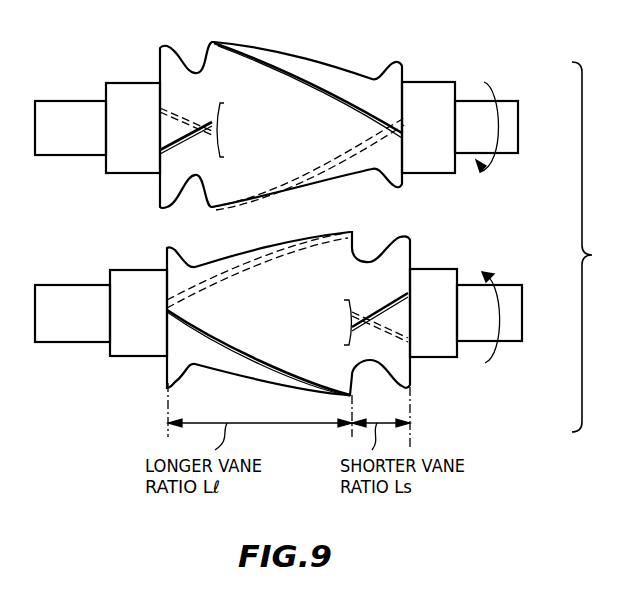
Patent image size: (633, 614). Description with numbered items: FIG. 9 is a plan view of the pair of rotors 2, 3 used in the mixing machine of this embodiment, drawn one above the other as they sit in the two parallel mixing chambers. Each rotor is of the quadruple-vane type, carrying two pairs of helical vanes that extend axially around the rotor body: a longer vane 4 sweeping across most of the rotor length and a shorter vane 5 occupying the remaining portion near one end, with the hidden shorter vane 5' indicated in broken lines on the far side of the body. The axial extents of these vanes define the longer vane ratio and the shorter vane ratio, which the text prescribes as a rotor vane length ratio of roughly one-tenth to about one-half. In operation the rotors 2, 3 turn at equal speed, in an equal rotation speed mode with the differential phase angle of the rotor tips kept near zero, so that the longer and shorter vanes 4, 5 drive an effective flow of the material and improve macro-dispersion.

The rotor 2 is at (512, 140).
The rotor 3 is at (515, 297).
The longer vane 4 is at (362, 152).
The shorter vane 5 is at (284, 224).
The shorter vane (hidden) 5' is at (284, 252).